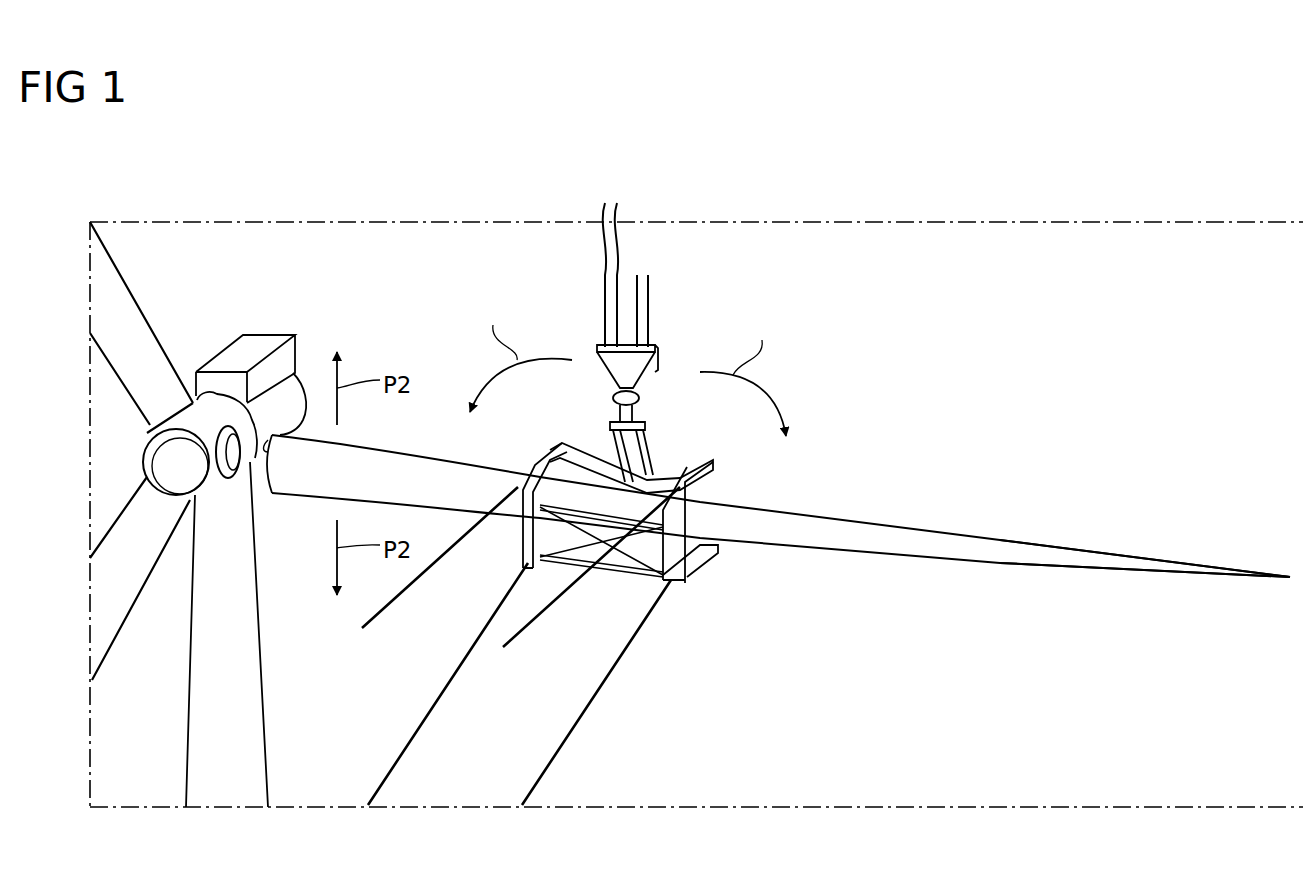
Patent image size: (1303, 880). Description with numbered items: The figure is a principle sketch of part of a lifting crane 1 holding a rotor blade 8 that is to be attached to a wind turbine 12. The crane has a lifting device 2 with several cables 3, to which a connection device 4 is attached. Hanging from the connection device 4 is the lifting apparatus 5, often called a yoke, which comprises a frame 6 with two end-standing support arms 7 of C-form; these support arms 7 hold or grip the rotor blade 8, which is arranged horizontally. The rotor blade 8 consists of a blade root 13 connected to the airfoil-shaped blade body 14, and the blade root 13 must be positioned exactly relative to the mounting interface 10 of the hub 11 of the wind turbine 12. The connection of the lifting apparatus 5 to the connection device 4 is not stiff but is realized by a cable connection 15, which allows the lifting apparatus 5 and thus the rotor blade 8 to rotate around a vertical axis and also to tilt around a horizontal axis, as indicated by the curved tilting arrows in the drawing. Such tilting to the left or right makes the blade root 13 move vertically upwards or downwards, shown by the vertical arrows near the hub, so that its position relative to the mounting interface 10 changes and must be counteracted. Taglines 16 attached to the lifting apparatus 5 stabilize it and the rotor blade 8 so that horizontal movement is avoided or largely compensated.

The lifting crane 1 is at (703, 265).
The lifting device 2 is at (575, 297).
The cables 3 is at (622, 258).
The connection device 4 is at (660, 362).
The lifting apparatus 5 is at (690, 625).
The frame 6 is at (587, 452).
The support arms 7 is at (520, 545).
The rotor blade 8 is at (852, 518).
The mounting interface 10 is at (240, 490).
The hub 11 is at (157, 463).
The wind turbine 12 is at (217, 265).
The blade root 13 is at (278, 488).
The blade body 14 is at (875, 548).
The cable connection 15 is at (640, 393).
The taglines 16 is at (392, 608).